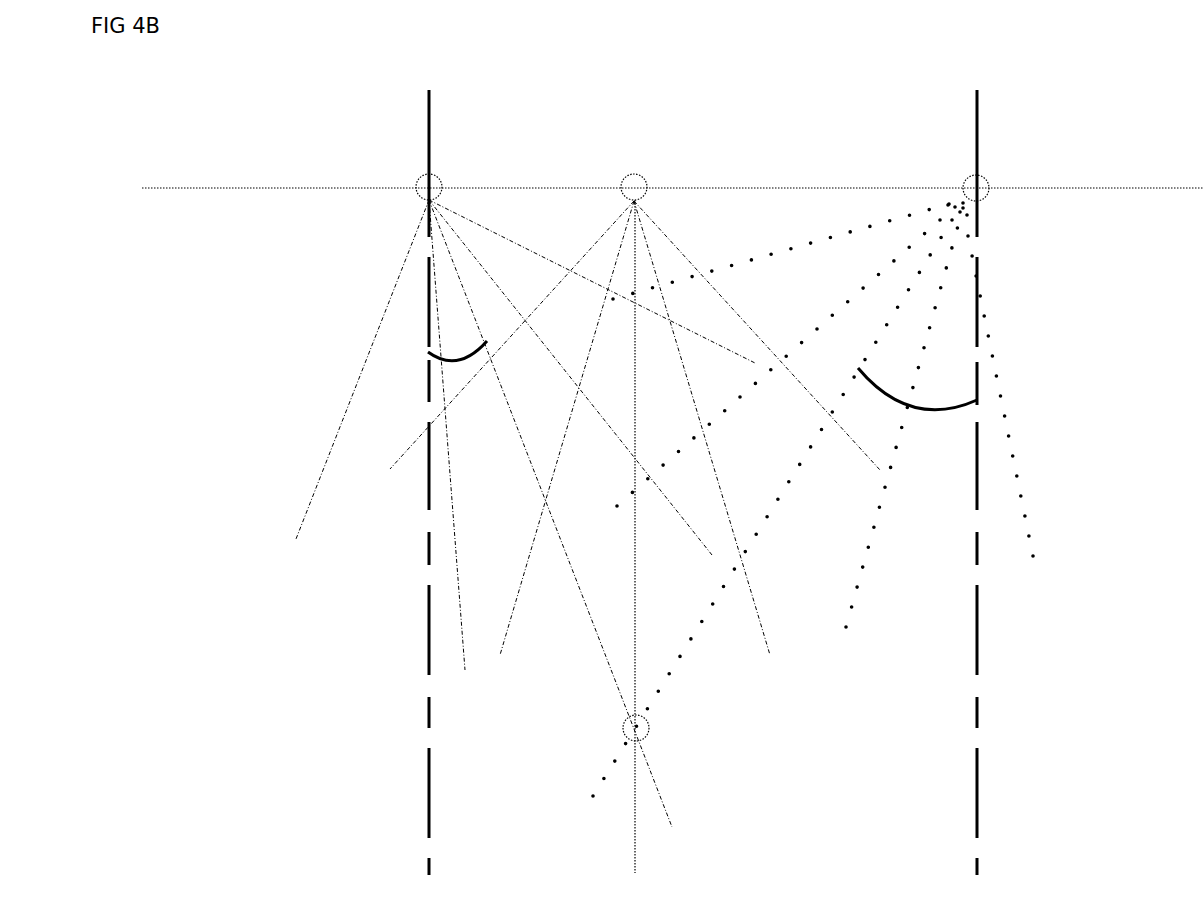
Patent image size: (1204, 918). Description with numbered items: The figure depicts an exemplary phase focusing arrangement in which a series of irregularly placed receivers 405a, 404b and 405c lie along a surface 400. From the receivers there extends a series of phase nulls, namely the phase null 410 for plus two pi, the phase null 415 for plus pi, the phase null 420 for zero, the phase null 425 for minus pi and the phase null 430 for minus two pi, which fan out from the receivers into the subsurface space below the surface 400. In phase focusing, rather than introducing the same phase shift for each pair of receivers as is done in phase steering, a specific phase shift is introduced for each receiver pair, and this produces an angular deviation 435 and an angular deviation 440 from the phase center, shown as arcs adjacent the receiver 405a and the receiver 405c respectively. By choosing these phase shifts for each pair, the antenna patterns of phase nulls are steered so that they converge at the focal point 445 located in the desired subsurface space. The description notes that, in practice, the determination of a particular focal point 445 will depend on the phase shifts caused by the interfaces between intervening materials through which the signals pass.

The surface 400 is at (210, 187).
The receiver 405a is at (429, 175).
The second transducer element 404b is at (634, 175).
The receiver 405c is at (966, 179).
The phase null for +2π 410 is at (294, 530).
The phase null for +π 415 is at (460, 640).
The phase null for 0 420 is at (620, 693).
The phase null for −π 425 is at (712, 555).
The phase null for −2π 430 is at (717, 343).
The angular deviation 435 is at (430, 350).
The angular deviation 440 is at (938, 412).
The focal point 445 is at (650, 735).